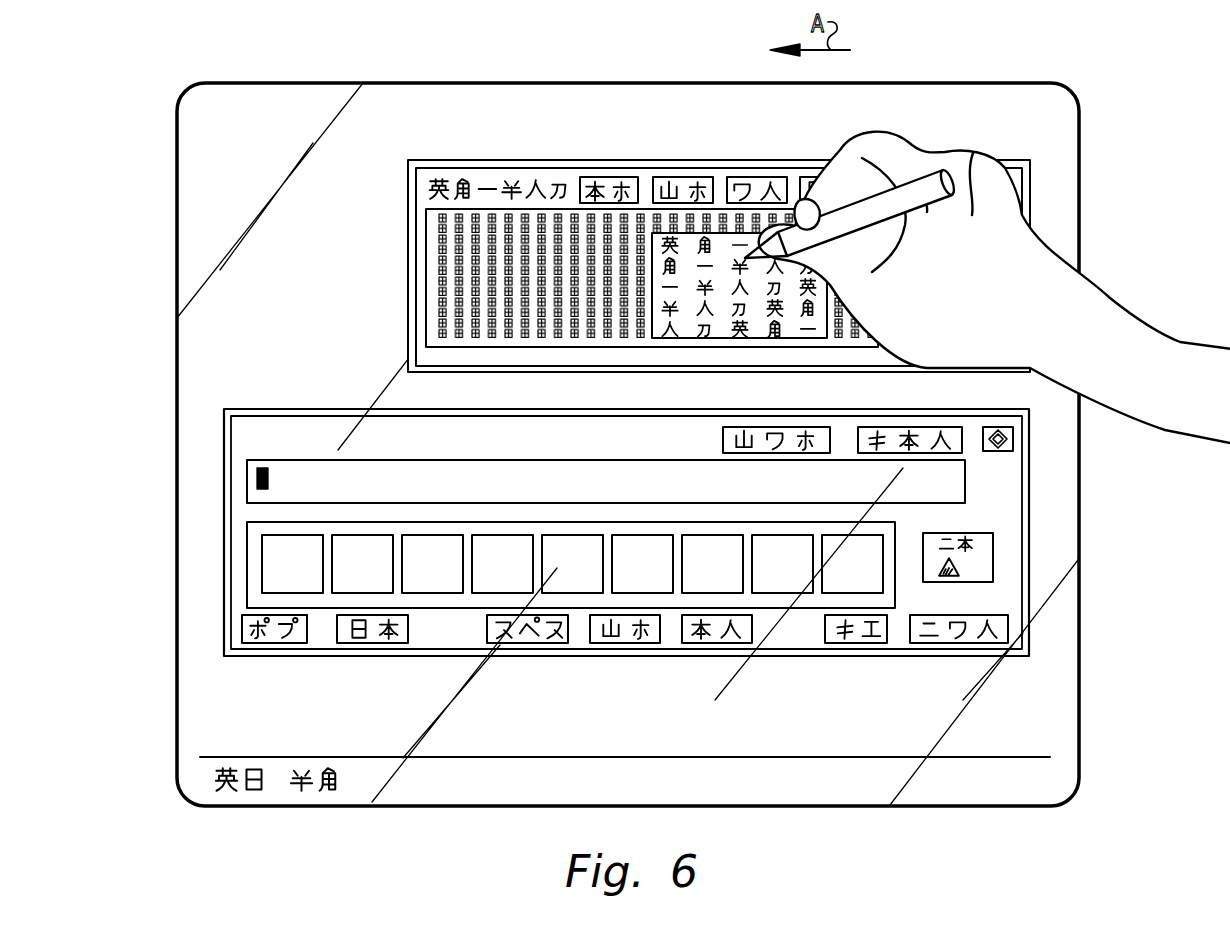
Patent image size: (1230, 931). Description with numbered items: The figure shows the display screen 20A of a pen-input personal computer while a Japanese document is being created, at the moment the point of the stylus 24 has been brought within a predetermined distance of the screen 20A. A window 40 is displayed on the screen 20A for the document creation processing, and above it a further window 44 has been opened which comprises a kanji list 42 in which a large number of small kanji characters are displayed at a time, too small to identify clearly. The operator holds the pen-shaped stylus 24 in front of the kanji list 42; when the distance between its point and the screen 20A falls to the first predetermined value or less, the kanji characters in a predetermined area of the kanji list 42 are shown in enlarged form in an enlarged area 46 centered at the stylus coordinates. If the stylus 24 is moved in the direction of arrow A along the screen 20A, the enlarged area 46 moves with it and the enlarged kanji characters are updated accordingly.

The screen 20A is at (1052, 617).
The stylus 24 is at (927, 182).
The window 40 is at (1033, 453).
The kanji list 42 is at (427, 273).
The window 44 is at (577, 160).
The enlarged area 46 is at (748, 337).